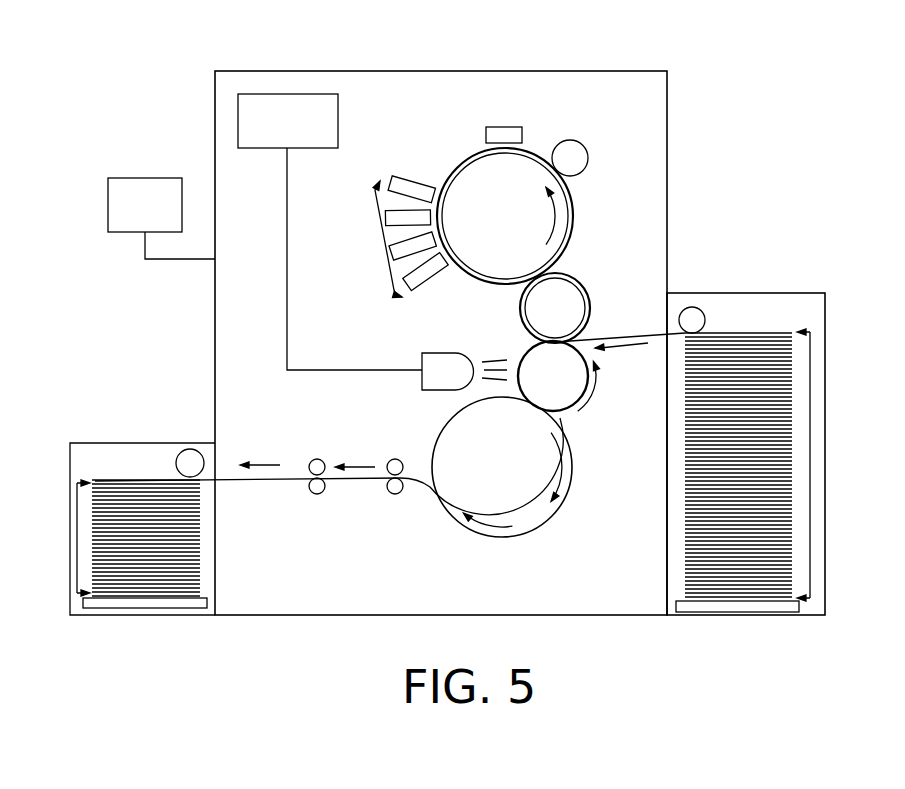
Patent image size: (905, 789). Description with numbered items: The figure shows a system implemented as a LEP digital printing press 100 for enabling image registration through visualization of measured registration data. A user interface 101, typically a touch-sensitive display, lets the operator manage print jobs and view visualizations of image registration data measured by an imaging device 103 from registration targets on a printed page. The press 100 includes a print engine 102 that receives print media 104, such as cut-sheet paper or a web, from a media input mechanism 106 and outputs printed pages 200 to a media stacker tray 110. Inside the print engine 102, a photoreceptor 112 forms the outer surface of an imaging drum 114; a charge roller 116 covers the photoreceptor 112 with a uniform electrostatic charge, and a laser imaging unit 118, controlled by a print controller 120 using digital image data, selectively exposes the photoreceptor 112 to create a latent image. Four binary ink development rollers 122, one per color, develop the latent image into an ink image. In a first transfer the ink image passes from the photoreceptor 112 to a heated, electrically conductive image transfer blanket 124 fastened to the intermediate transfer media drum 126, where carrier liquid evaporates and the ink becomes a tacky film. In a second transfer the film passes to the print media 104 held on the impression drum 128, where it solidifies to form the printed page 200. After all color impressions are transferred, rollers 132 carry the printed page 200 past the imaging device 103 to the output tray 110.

The LEP digital printing press 100 is at (203, 40).
The user interface 101 is at (128, 215).
The print engine 102 is at (595, 71).
The imaging device 103 is at (429, 382).
The print media 104 is at (613, 337).
The media input mechanism 106 is at (762, 293).
The media stacker tray 110 is at (75, 443).
The photoreceptor 112 is at (470, 156).
The imaging drum 114 is at (488, 226).
The charge roller 116 is at (589, 147).
The laser imaging unit 118 is at (520, 127).
The print controller 120 is at (271, 131).
The binary ink development (BID) roller 122 is at (383, 243).
The image transfer blanket 124 is at (578, 284).
The intermediate transfer media (ITM) drum 126 is at (538, 318).
The impression drum 128 is at (536, 386).
The rollers 132 is at (485, 477).
The printed page 200 is at (525, 353).